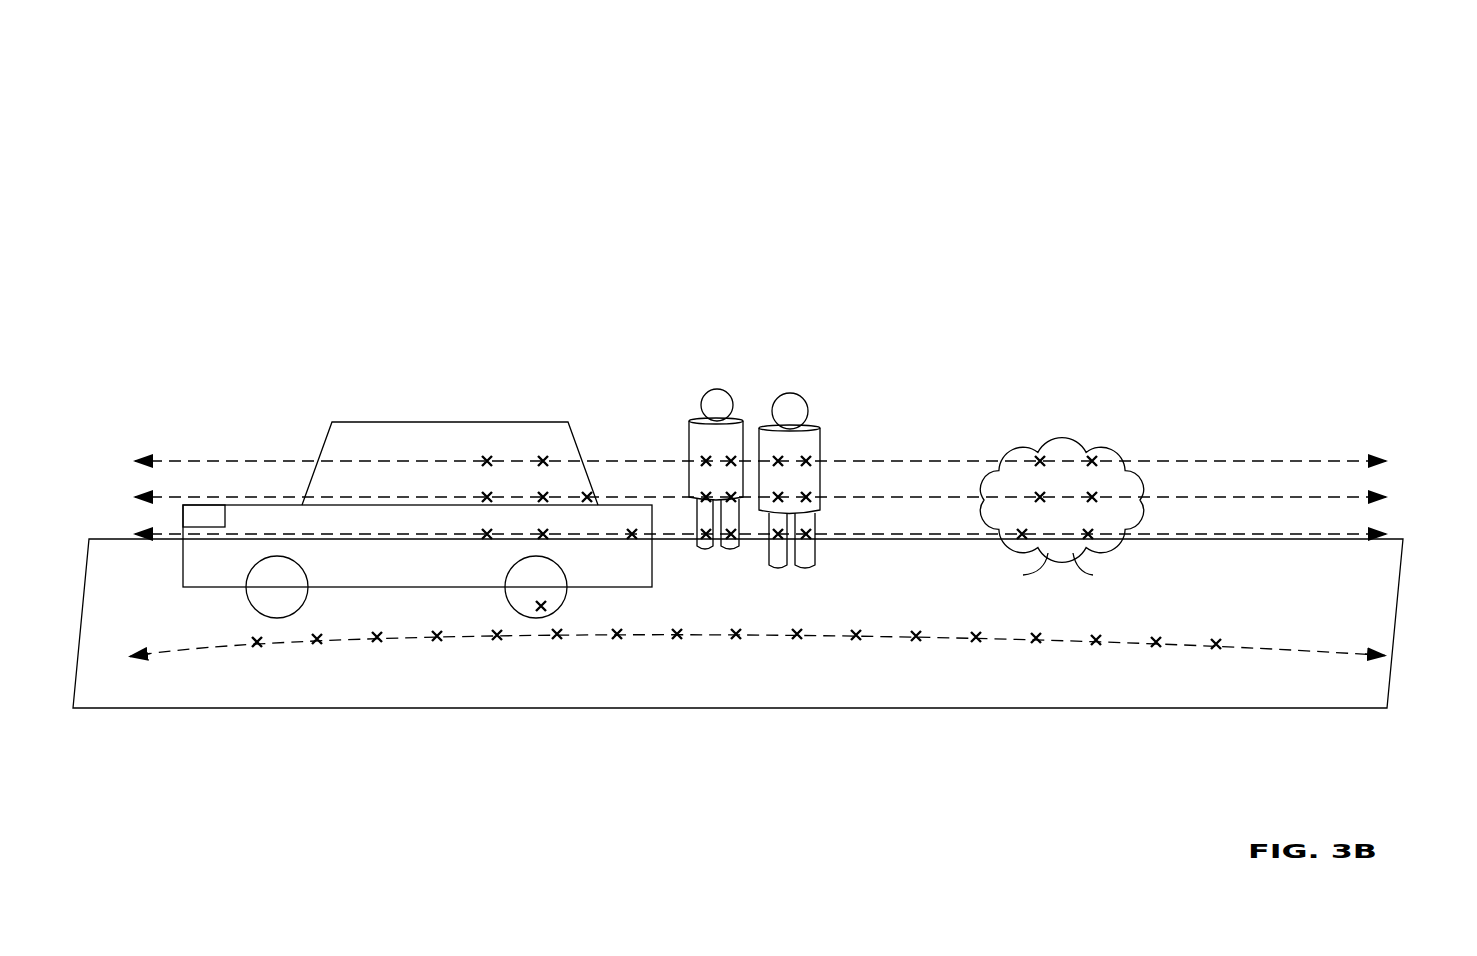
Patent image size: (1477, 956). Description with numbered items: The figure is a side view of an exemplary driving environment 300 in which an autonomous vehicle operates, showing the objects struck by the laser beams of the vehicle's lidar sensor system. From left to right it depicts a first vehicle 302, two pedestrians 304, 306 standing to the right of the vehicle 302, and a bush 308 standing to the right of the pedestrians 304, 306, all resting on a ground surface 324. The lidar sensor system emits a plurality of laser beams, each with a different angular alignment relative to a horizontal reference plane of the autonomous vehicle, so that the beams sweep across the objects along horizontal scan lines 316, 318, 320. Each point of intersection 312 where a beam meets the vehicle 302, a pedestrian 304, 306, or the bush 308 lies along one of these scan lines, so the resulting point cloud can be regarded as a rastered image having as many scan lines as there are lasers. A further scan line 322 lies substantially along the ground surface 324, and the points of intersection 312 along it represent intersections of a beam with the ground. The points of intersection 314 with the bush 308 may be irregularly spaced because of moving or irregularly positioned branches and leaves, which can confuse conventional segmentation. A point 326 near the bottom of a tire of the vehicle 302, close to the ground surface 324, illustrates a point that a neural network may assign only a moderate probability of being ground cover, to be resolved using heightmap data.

The driving environment 300 is at (222, 78).
The first vehicle 302 is at (465, 422).
The pedestrian 304 is at (718, 388).
The pedestrian 306 is at (802, 396).
The bush 308 is at (1043, 447).
The points of intersection 312 is at (810, 458).
The points of intersection with the bush 314 is at (1098, 458).
The scan line 316 is at (1379, 461).
The scan line 318 is at (1379, 498).
The scan line 320 is at (1379, 535).
The scan line 322 is at (1379, 652).
The ground surface 324 is at (1380, 594).
The point 326 is at (540, 610).